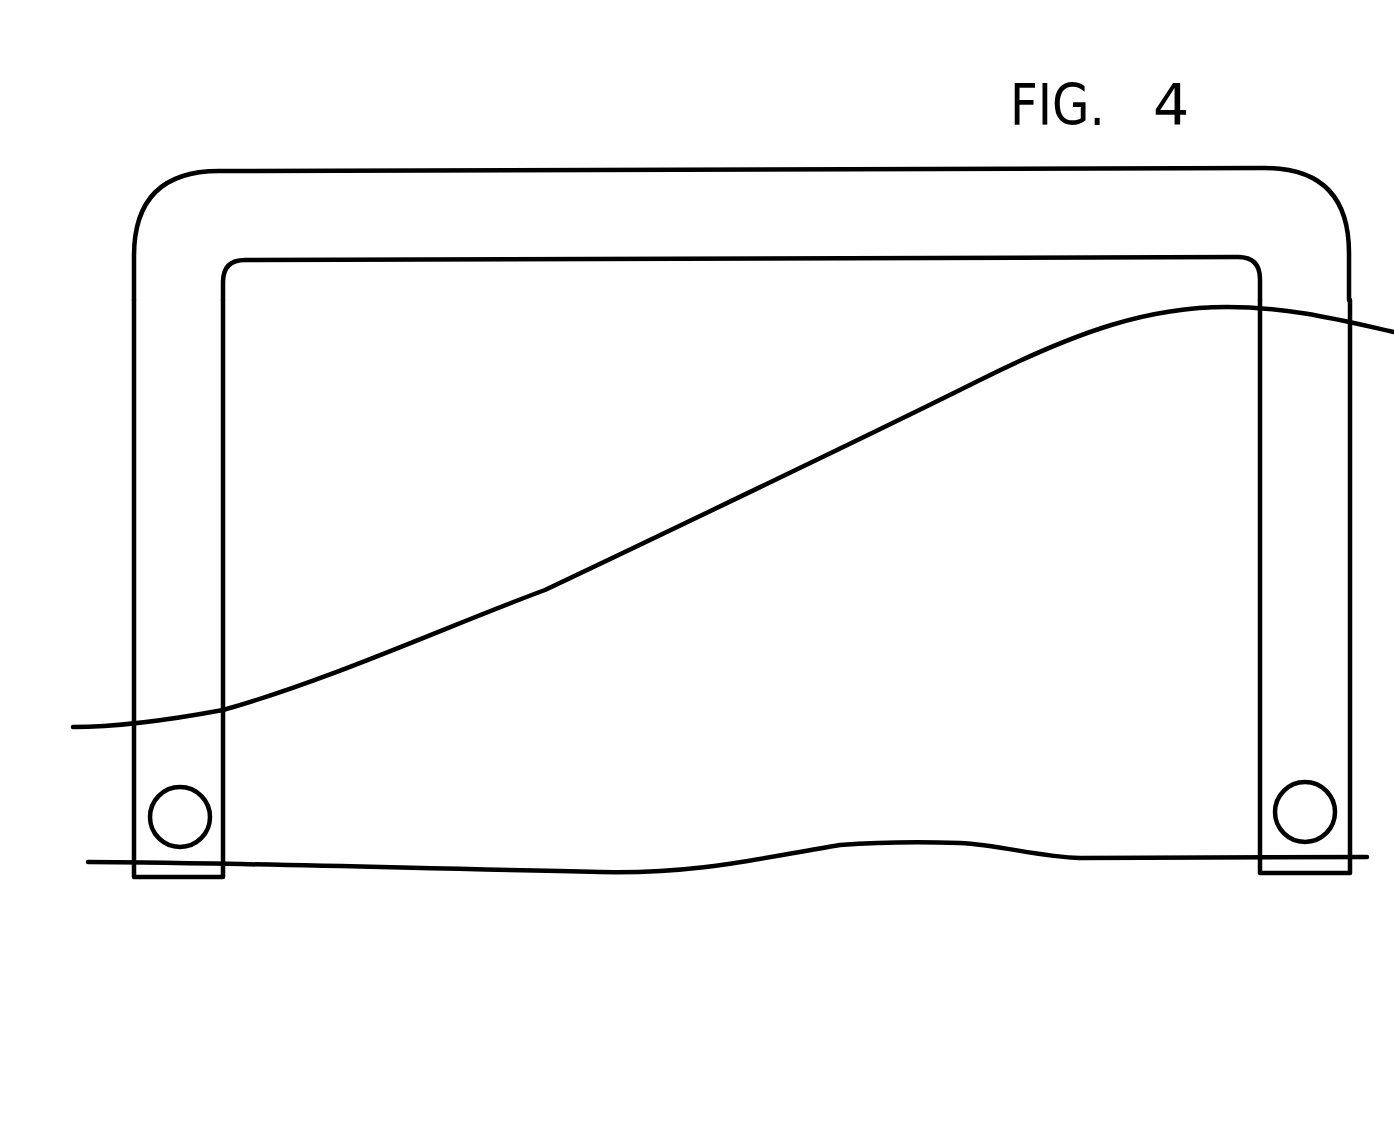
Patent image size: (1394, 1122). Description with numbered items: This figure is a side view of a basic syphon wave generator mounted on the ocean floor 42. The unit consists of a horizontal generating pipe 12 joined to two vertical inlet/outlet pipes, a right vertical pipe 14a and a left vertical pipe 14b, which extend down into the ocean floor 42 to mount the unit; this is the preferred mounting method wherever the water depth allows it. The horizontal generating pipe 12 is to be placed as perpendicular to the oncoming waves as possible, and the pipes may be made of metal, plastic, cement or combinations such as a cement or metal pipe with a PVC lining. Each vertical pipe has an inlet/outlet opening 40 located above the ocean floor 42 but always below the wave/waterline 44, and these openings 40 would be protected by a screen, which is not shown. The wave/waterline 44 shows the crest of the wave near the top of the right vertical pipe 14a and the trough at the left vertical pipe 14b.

The horizontal generating pipe 12 is at (447, 265).
The right vertical pipe 14a is at (1260, 468).
The left vertical pipe 14b is at (223, 500).
The inlet/outlet openings 40 is at (210, 830).
The ocean floor 42 is at (727, 858).
The wave/waterline 44 is at (637, 530).